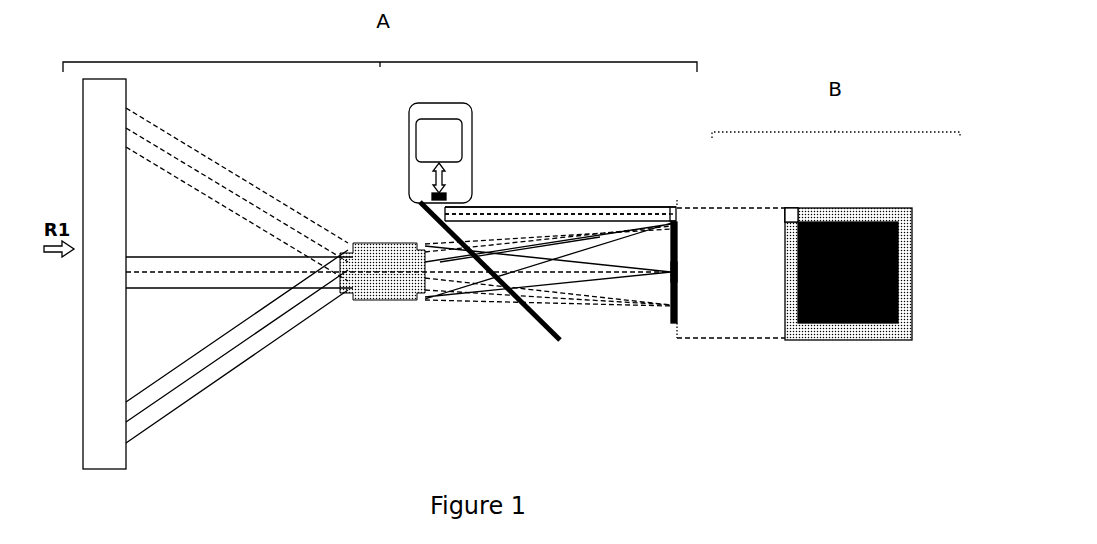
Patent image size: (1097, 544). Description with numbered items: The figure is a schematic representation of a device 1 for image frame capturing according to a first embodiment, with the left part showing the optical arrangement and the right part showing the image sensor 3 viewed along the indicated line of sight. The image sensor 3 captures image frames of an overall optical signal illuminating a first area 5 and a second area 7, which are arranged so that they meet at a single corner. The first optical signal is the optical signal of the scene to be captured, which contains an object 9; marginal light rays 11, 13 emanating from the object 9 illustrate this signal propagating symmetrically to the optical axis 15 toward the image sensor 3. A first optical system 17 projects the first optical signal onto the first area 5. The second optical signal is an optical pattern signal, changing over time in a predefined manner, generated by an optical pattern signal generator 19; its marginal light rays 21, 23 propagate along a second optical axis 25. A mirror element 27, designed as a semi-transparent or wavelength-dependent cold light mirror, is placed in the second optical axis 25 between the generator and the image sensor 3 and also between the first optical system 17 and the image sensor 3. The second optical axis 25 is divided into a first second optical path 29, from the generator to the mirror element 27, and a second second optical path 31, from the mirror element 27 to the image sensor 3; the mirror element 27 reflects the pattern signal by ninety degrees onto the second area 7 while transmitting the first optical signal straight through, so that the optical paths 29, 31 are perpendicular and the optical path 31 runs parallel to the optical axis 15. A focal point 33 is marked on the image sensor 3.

The device 1 is at (332, 414).
The image sensor 3 is at (783, 340).
The first area 5 is at (680, 238).
The second area 7 is at (681, 208).
The object 9 is at (130, 87).
The light ray 11 is at (190, 401).
The light ray 13 is at (212, 160).
The optical axis 15 is at (150, 269).
The first optical system 17 is at (381, 307).
The optical pattern signal generator 19 is at (473, 151).
The light ray 21 is at (608, 206).
The light ray 23 is at (640, 217).
The second optical axis 25 is at (520, 206).
The mirror element 27 is at (548, 329).
The first second optical path 29 is at (431, 192).
The second second optical path 31 is at (507, 233).
The focal point 33 is at (680, 272).